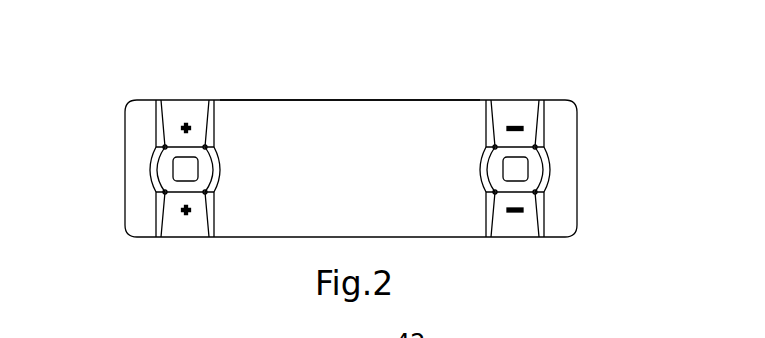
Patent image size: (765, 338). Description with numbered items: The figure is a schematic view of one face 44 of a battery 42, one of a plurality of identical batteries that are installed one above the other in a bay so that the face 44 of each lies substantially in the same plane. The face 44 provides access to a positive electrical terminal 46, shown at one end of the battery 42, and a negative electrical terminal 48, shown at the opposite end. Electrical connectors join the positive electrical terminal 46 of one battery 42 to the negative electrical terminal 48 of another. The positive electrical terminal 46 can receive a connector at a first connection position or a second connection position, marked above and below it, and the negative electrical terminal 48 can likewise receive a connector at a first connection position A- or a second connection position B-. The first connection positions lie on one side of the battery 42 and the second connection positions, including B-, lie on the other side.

The battery 42 is at (327, 120).
The face 44 is at (383, 121).
The positive electrical terminal 46 is at (152, 172).
The negative electrical terminal 48 is at (578, 172).
The first connection position A- is at (522, 118).
The second connection position B- is at (512, 221).